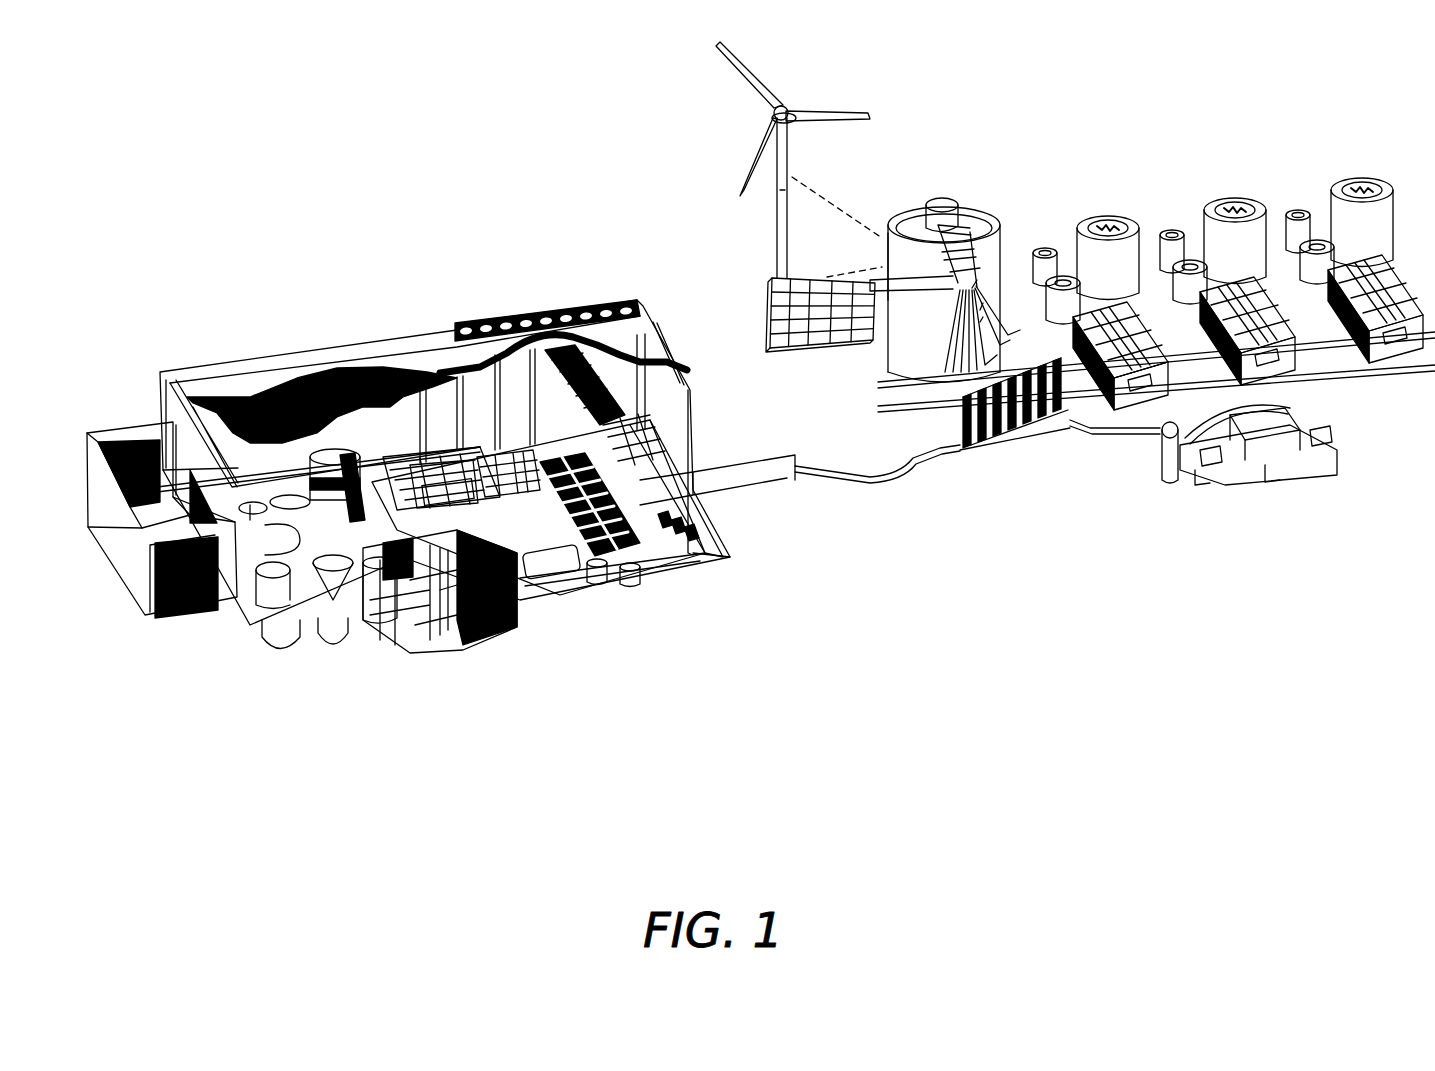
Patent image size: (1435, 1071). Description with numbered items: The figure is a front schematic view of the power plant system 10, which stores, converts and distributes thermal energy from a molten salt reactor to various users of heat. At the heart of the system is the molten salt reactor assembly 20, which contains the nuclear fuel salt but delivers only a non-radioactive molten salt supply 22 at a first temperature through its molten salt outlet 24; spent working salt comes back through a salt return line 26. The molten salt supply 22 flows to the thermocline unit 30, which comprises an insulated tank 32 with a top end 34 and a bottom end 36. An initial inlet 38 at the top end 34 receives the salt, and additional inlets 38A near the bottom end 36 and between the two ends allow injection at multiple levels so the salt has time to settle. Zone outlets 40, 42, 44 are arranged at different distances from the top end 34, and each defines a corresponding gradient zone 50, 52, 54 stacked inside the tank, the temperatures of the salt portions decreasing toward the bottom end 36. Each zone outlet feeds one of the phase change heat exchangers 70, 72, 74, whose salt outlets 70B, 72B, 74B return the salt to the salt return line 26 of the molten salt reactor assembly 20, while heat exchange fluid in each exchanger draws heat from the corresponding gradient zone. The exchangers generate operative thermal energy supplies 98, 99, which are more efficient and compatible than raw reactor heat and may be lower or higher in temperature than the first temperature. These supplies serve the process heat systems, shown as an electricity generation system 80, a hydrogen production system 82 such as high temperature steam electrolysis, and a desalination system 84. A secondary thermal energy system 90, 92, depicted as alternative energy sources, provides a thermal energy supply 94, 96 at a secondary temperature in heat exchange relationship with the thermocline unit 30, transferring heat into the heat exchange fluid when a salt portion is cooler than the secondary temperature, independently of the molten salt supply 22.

The power plant system 10 is at (1060, 144).
The molten salt reactor assembly 20 is at (460, 617).
The molten salt supply 22 is at (890, 233).
The molten salt outlet 24 is at (893, 283).
The salt return line 26 is at (968, 300).
The thermocline unit 30 is at (925, 203).
The insulated tank 32 is at (968, 203).
The top end 34 is at (983, 233).
The bottom end 36 is at (963, 290).
The initial inlet 38 is at (962, 262).
The additional inlet 38A is at (958, 295).
The top zone outlet 40 is at (977, 280).
The zone outlet 42 is at (983, 303).
The zone outlet 44 is at (983, 317).
The top gradient zone 50 is at (963, 290).
The gradient zone 52 is at (963, 290).
The gradient zone 54 is at (963, 292).
The phase change heat exchanger 70 is at (987, 450).
The salt outlet 70B is at (962, 298).
The phase change heat exchanger 72 is at (1017, 430).
The salt outlet 72B is at (966, 298).
The phase change heat exchanger 74 is at (1045, 440).
The salt outlet 74B is at (970, 300).
The electricity generation system 80 is at (1284, 470).
The hydrogen production system 82 is at (1113, 207).
The desalination system 84 is at (1240, 223).
The secondary thermal energy system 90 is at (772, 119).
The secondary thermal energy system 92 is at (782, 323).
The thermal energy supply 94 is at (803, 203).
The thermal energy supply 96 is at (827, 277).
The operative thermal energy supply 98 is at (1127, 393).
The operative thermal energy supply 99 is at (1282, 368).